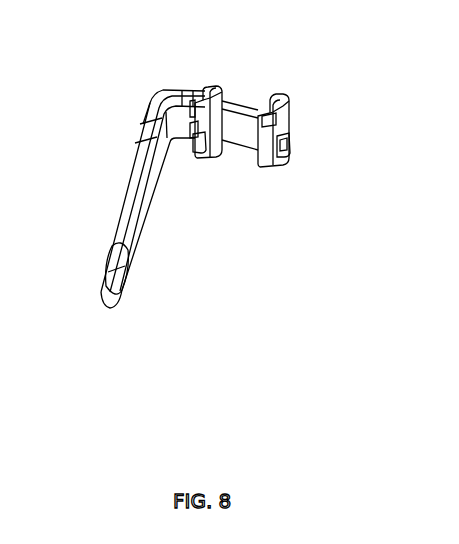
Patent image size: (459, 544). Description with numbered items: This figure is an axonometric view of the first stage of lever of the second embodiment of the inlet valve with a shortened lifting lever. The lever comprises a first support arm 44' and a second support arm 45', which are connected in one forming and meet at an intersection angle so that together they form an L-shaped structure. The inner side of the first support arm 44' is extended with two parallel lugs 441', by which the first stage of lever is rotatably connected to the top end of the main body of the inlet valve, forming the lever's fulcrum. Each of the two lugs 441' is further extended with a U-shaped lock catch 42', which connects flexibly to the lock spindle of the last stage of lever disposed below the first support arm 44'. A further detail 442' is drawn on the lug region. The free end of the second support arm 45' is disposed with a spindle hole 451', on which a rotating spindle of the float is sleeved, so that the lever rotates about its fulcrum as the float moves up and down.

The lock catch 42' is at (284, 133).
The first support arm 44' is at (268, 80).
The lugs 441' is at (236, 162).
The locking nub 442' is at (301, 194).
The second support arm 45' is at (145, 215).
The spindle hole 451' is at (178, 292).